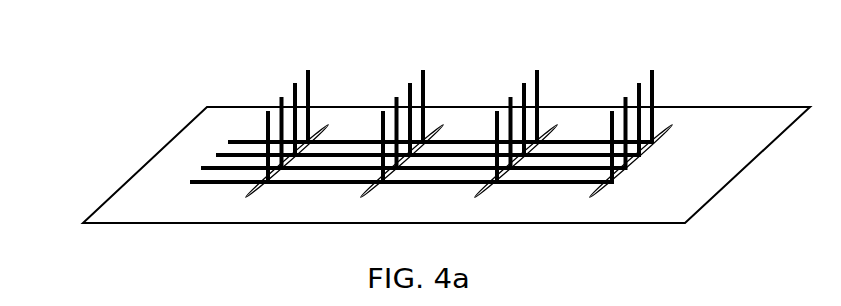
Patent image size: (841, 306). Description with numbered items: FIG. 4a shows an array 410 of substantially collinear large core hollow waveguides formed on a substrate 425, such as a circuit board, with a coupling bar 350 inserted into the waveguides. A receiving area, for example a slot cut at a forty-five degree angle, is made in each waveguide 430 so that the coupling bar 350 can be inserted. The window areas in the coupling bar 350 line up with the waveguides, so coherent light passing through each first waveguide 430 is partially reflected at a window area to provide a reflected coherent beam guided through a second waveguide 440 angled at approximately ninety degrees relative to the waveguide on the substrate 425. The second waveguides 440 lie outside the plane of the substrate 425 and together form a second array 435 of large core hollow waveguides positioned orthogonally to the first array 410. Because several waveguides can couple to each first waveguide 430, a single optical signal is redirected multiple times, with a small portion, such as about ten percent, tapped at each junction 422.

The array of substantially collinear large core hollow waveguides 410 is at (462, 135).
The substrate 425 is at (115, 190).
The large core hollow waveguide 430 is at (191, 182).
The second array of large core hollow waveguides 435 is at (439, 101).
The second waveguide 440 is at (308, 72).
The junction 422 is at (526, 156).
The coupling bar 350 is at (246, 198).